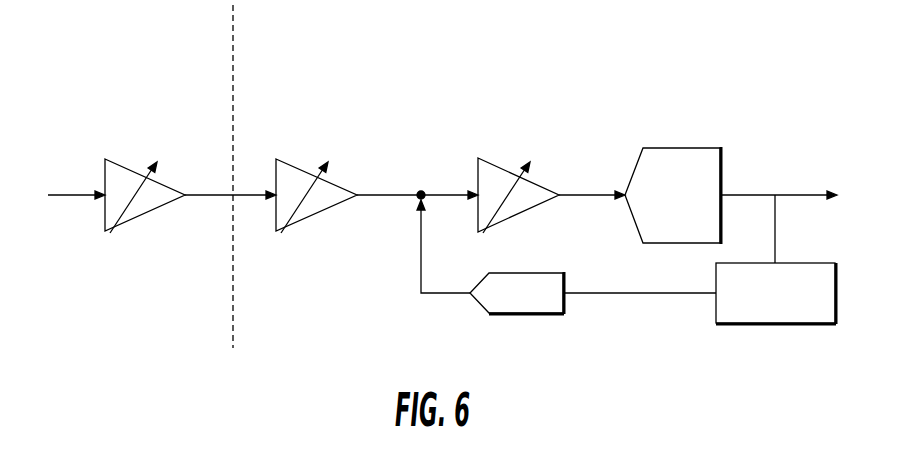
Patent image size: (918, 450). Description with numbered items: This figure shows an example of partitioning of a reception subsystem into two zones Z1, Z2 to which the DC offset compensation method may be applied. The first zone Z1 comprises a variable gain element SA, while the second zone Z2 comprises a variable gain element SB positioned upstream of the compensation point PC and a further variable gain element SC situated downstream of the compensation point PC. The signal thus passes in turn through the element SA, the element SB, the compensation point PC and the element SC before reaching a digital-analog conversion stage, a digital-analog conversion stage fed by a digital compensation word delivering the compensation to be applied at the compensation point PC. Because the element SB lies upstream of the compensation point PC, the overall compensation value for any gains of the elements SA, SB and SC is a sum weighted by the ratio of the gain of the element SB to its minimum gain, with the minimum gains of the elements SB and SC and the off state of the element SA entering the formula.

The zone Z1 is at (161, 176).
The zone Z2 is at (627, 168).
The variable gain element SA is at (84, 243).
The variable gain element SB is at (321, 246).
The compensation point PC is at (422, 189).
The variable gain element SC is at (584, 160).